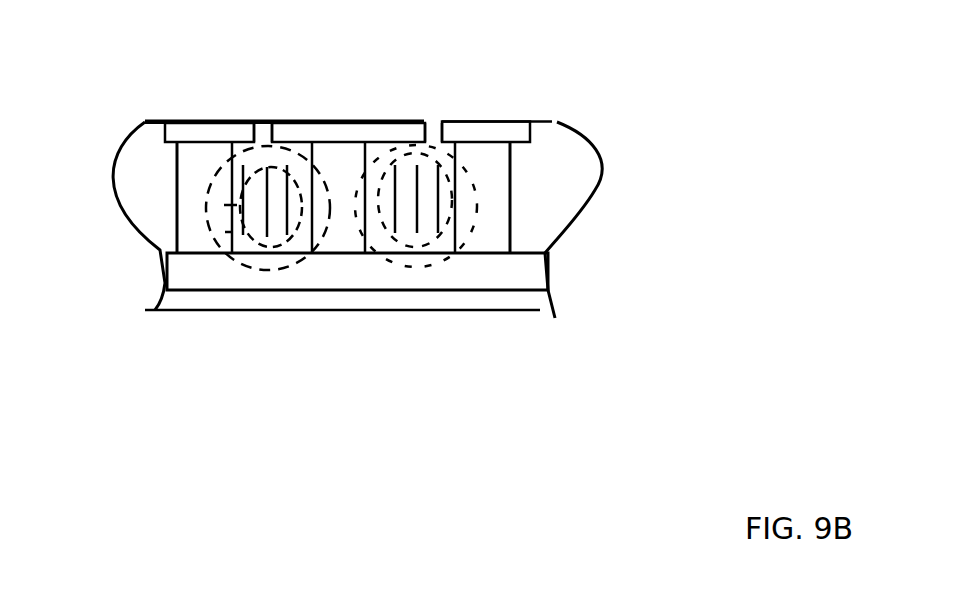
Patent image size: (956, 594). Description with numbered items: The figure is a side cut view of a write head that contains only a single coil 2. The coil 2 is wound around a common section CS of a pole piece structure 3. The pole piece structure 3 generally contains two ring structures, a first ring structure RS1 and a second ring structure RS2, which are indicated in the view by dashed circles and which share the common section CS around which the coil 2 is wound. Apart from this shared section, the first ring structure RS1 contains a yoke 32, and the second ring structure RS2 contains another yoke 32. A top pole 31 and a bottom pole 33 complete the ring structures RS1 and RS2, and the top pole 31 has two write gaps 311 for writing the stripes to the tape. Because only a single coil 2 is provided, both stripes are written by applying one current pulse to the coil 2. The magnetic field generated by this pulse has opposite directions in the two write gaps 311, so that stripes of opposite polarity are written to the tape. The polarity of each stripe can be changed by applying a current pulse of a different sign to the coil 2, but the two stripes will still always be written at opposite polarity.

The pole piece structure 3 is at (203, 119).
The top pole 31 is at (490, 121).
The write gaps 311 is at (433, 120).
The yoke 32 is at (185, 230).
The common section CS is at (337, 232).
The first ring structure RS1 is at (213, 178).
The second ring structure RS2 is at (437, 272).
The coil 2 is at (417, 198).
The bottom pole 33 is at (208, 292).